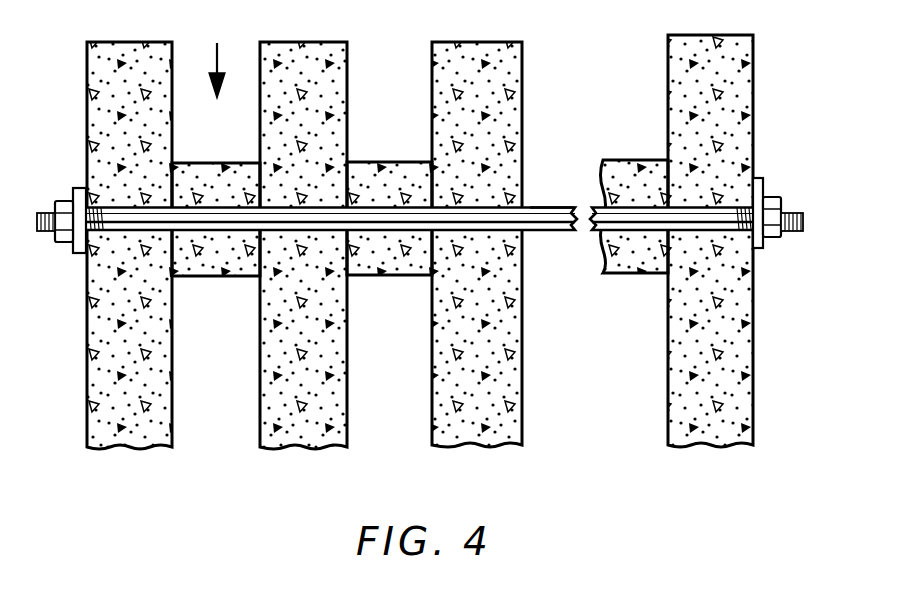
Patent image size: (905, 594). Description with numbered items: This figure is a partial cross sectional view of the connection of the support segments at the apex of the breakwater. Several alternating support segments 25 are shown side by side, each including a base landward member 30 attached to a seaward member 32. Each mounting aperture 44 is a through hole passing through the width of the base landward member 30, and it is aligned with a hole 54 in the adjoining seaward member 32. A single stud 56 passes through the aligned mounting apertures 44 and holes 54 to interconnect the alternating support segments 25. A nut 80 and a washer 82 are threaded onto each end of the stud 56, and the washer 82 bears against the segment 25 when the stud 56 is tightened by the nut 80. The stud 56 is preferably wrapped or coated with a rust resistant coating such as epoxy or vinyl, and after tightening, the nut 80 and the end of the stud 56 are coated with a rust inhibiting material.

The support segment 25 is at (214, 57).
The base landward member 30 is at (120, 58).
The seaward member 32 is at (205, 175).
The mounting aperture 44 is at (133, 209).
The hole 54 is at (211, 233).
The stud 56 is at (540, 207).
The nut 80 is at (57, 239).
The washer 82 is at (78, 258).